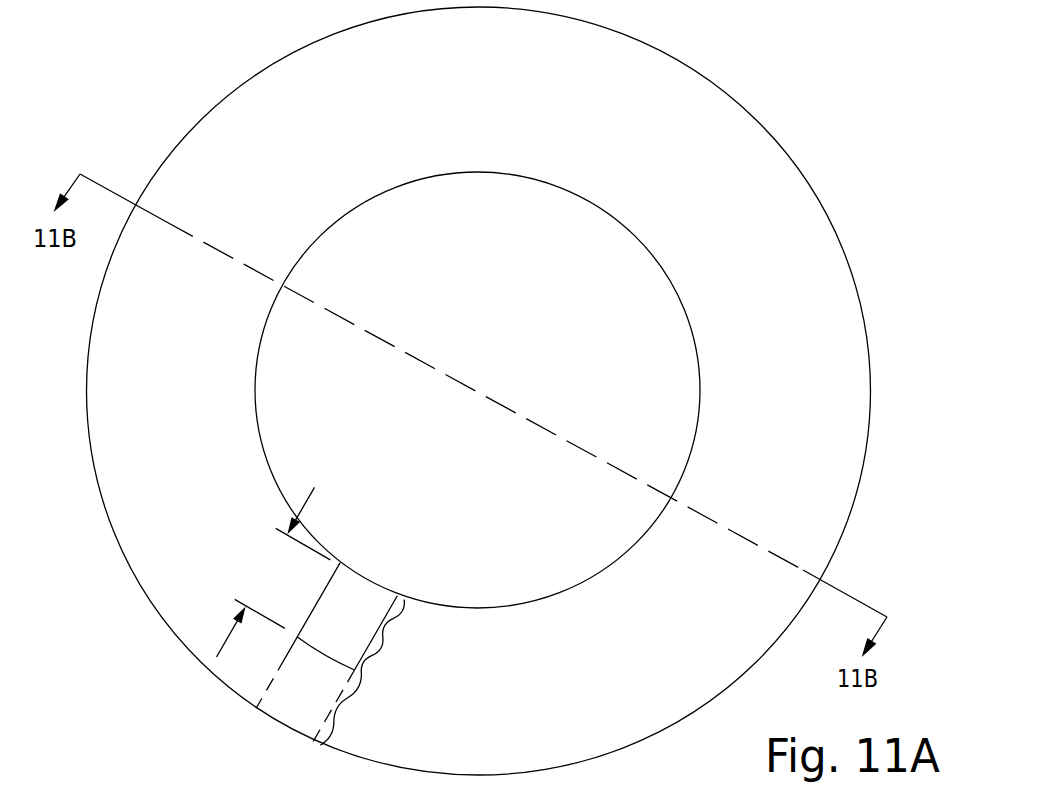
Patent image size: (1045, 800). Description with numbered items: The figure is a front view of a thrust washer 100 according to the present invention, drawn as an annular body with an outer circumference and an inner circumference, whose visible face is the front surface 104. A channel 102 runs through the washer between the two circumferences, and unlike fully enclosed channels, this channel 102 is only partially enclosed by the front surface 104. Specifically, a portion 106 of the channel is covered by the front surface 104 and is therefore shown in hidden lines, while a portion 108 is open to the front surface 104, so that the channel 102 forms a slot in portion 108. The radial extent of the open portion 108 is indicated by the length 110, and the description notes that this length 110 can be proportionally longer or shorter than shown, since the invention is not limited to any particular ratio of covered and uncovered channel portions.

The thrust washer 100 is at (252, 80).
The channel 102 is at (274, 662).
The front surface 104 is at (742, 179).
The portion 106 is at (361, 709).
The portion 108 is at (404, 637).
The length 110 is at (274, 572).